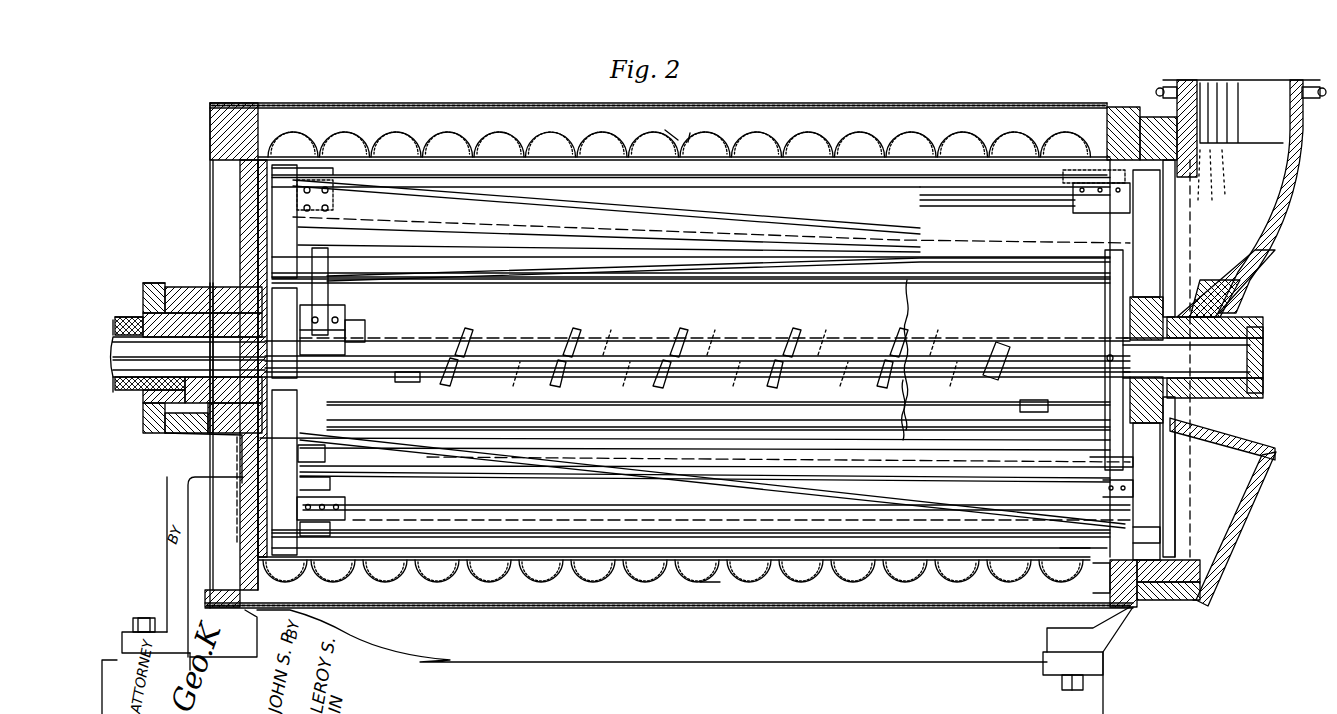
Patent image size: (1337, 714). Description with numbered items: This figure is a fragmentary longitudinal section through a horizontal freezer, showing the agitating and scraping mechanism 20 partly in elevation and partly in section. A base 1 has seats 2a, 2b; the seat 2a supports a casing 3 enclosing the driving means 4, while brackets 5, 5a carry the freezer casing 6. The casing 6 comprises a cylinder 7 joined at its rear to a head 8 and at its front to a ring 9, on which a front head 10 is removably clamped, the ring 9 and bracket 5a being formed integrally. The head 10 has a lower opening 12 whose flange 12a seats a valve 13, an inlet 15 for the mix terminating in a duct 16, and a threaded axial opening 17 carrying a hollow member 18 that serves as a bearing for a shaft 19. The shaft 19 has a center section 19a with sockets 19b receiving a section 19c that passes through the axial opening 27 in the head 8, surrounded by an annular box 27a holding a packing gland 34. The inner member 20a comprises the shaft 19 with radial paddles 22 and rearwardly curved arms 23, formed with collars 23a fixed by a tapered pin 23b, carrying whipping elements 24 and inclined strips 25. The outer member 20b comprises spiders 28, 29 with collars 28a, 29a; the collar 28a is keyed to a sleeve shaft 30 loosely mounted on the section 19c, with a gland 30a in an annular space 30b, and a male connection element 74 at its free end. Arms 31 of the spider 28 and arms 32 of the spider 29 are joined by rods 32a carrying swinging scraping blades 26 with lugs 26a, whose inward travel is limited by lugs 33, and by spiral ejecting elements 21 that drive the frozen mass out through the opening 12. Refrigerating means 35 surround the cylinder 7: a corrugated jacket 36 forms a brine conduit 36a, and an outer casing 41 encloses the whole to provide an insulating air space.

The base 1 is at (583, 645).
The seat 2a is at (210, 670).
The seat 2b is at (1045, 670).
The casing 3 is at (685, 362).
The driving means 4 is at (1092, 360).
The bracket 5 is at (185, 650).
The bracket 5a is at (1047, 645).
The freezer casing 6 is at (691, 347).
The cylinder 7 is at (696, 562).
The head 8 is at (236, 470).
The ring 9 is at (1160, 570).
The front head 10 is at (1175, 600).
The opening 12 is at (1192, 515).
The flange 12a is at (1262, 448).
The valve 13 is at (1225, 552).
The inlet 15 is at (1240, 196).
The duct 16 is at (1258, 90).
The threaded opening 17 is at (1198, 300).
The hollow member 18 is at (1222, 352).
The shaft 19 is at (1250, 362).
The center section 19a is at (917, 410).
The socket 19b is at (1005, 340).
The shaft section 19c is at (1062, 305).
The agitating and scraping mechanism 20 is at (718, 342).
The inner member 20a is at (718, 373).
The outer member 20b is at (695, 474).
The ejecting element 21 is at (594, 212).
The paddle 22 is at (610, 382).
The arm 23 is at (330, 262).
The collar 23a is at (726, 392).
The tapered pin 23b is at (1113, 358).
The whipping element 24 is at (900, 292).
The strip 25 is at (950, 255).
The scraping blade 26 is at (860, 187).
The lug 26a is at (1112, 180).
The axial opening 27 is at (222, 295).
The annular box 27a is at (175, 445).
The spider 28 is at (262, 232).
The collar 28a is at (305, 312).
The spider 29 is at (1160, 240).
The collar 29a is at (1165, 282).
The sleeve shaft 30 is at (140, 322).
The gland 30a is at (140, 425).
The annular space 30b is at (143, 290).
The arm 31 is at (284, 228).
The arm 32 is at (1155, 222).
The rod 32a is at (960, 200).
The lug 33 is at (317, 528).
The packing gland 34 is at (175, 292).
The refrigerating means 35 is at (684, 591).
The jacket 36 is at (515, 130).
The brine conduit 36a is at (846, 588).
The casing 41 is at (770, 108).
The male connection element 74 is at (130, 395).